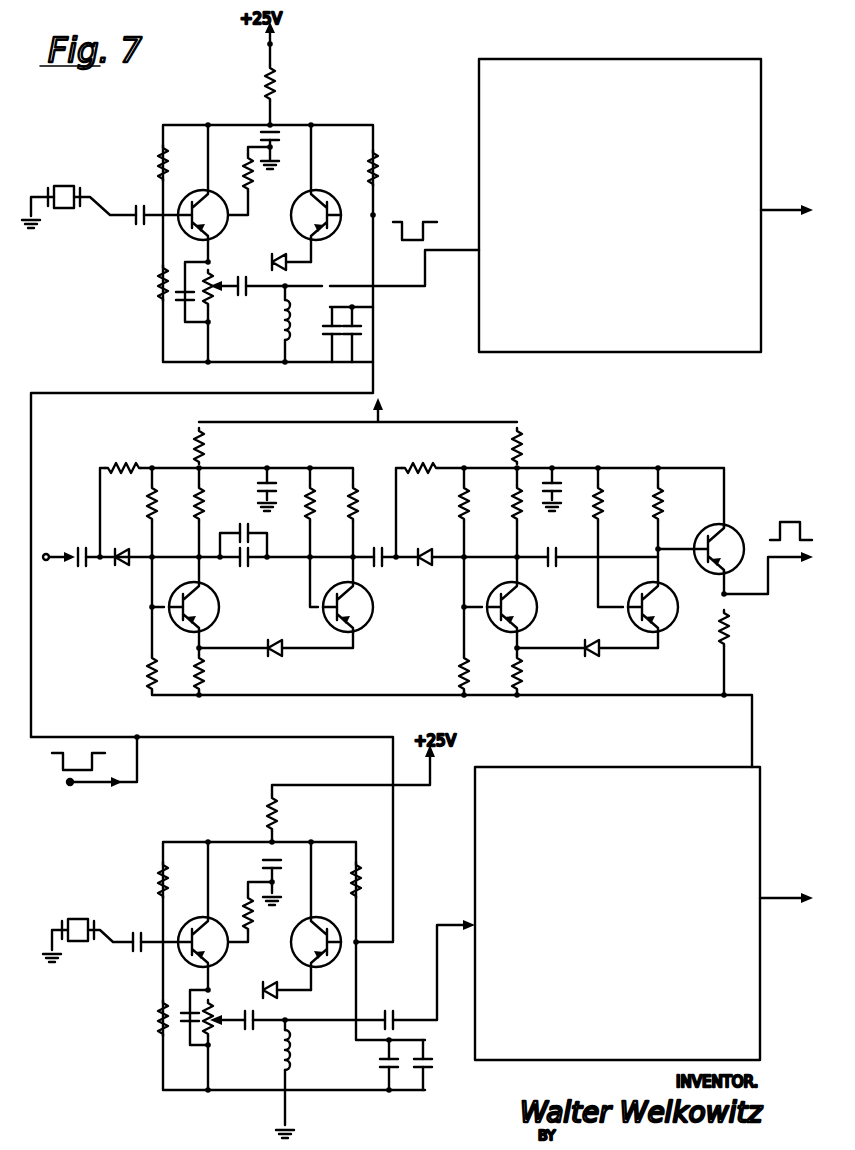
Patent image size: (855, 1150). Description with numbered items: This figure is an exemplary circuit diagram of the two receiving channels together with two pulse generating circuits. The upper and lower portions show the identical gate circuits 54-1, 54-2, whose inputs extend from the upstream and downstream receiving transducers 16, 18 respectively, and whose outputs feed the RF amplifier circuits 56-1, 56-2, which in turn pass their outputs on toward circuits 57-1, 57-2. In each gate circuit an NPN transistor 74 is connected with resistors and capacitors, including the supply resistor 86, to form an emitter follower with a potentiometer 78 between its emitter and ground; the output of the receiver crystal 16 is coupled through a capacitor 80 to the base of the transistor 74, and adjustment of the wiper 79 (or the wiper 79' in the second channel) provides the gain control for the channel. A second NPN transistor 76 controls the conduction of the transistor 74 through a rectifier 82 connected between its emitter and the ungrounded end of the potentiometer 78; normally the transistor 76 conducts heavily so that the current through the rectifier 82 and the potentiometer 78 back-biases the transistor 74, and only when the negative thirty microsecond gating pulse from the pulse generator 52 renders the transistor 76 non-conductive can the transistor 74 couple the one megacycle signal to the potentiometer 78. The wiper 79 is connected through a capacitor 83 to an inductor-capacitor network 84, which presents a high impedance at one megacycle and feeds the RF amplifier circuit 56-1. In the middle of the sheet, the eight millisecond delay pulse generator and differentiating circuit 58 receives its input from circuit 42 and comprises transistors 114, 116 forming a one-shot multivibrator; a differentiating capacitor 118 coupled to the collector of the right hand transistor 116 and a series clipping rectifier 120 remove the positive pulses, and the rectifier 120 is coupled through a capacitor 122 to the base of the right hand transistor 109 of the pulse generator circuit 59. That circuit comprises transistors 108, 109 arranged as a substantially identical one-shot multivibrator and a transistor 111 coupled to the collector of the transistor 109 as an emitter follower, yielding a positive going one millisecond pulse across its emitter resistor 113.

The upstream receiving transducer 16 is at (64, 186).
The downstream receiving transducer 18 is at (78, 916).
The circuit 42 (source) 42 is at (50, 551).
The 30 micro-second pulse generator 52 is at (64, 811).
The gate circuit 54-1 is at (237, 116).
The gate circuit 54-2 is at (226, 832).
The RF amplifier circuit 56-1 is at (645, 62).
The RF amplifier circuit 56-2 is at (622, 767).
The output circuit 57-1 is at (787, 204).
The output circuit 57-2 is at (786, 896).
The eight millisecond delay pulse generator and differentiating circuit 58 is at (397, 582).
The pulse generator circuit 59 is at (603, 559).
The NPN transistor 74 is at (198, 200).
The NPN transistor 76 is at (322, 193).
The potentiometer 78 is at (212, 302).
The wiper 79 is at (231, 265).
The wiper 79' is at (231, 1008).
The capacitor 80 is at (133, 234).
The rectifier 82 is at (292, 252).
The capacitor 83 is at (247, 296).
The inductor-capacitor network 84 is at (317, 685).
The resistor 86 is at (278, 101).
The NPN transistor 108 is at (543, 618).
The NPN transistor 109 is at (648, 588).
The transistor 111 is at (735, 532).
The emitter resistor 113 is at (720, 632).
The transistor 114 is at (214, 604).
The transistor 116 is at (370, 620).
The differentiating capacitor 118 is at (383, 563).
The clipping rectifier 120 is at (440, 531).
The capacitor 122 is at (553, 564).